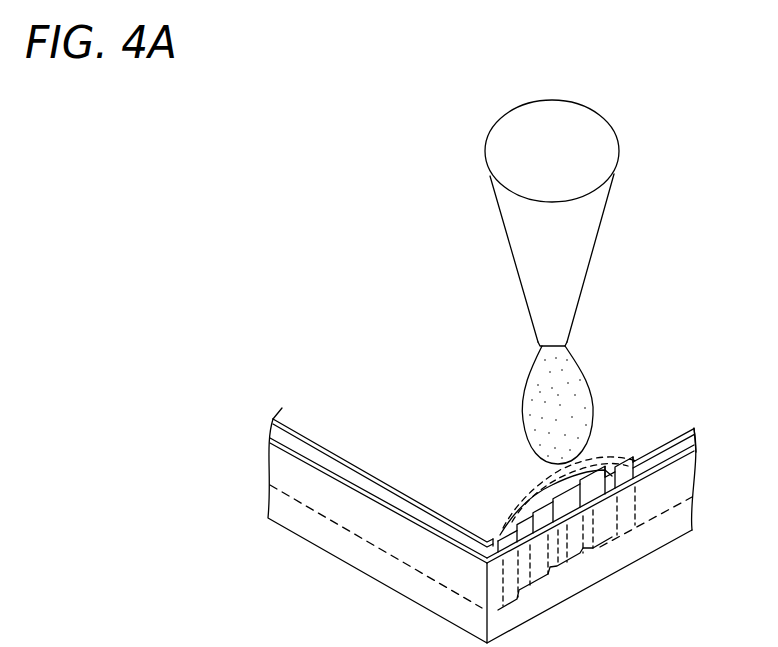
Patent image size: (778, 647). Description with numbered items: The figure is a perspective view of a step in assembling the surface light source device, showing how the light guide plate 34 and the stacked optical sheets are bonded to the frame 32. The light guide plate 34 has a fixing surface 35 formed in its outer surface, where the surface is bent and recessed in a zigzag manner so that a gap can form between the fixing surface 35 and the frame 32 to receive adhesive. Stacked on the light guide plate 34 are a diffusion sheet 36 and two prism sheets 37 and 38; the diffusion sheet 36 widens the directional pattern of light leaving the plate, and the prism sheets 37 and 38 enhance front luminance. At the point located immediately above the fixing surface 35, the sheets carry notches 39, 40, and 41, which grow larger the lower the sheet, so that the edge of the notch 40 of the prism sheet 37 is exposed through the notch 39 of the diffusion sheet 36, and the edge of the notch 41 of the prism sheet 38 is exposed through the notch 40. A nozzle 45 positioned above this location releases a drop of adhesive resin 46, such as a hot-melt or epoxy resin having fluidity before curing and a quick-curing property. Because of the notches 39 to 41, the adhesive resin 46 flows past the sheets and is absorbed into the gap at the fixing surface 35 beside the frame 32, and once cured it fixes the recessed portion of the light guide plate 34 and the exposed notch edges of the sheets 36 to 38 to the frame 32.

The frame 32 is at (352, 552).
The light guide plate 34 is at (697, 441).
The fixing surface 35 is at (567, 588).
The diffusion sheet 36 is at (350, 462).
The prism sheet 37 is at (381, 464).
The prism sheet 38 is at (378, 467).
The notch 39 is at (600, 458).
The notch 40 is at (618, 465).
The notch 41 is at (568, 477).
The nozzle 45 is at (575, 249).
The adhesive resin 46 is at (547, 413).